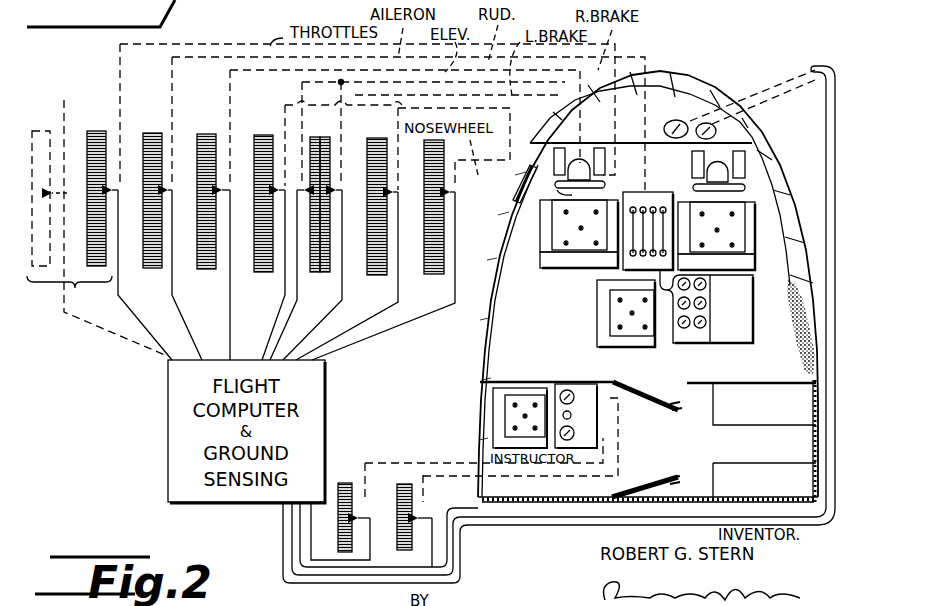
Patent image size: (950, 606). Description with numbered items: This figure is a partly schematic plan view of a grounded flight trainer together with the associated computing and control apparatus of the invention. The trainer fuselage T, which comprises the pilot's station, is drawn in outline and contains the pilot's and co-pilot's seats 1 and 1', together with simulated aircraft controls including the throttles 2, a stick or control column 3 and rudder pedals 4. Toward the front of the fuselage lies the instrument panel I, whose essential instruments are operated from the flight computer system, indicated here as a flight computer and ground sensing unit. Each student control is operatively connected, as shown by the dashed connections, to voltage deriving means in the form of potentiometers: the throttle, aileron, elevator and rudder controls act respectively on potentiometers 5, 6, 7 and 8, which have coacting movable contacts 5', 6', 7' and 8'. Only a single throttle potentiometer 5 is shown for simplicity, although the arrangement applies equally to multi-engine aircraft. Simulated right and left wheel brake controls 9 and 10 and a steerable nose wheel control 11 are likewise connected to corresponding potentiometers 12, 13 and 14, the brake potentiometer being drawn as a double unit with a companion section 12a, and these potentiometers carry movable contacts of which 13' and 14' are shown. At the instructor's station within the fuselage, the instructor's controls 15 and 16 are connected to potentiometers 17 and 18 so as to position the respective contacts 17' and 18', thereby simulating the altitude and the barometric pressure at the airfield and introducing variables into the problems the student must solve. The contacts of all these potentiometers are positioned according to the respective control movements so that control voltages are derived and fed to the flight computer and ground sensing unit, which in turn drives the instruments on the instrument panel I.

The pilot's seat 1 is at (570, 234).
The co-pilot's seat 1' is at (728, 236).
The throttles 2 is at (655, 208).
The stick or control column 3 is at (640, 186).
The rudder pedals 4 is at (554, 154).
The throttle potentiometer 5 is at (96, 182).
The throttle potentiometer movable contact 5' is at (140, 275).
The aileron potentiometer 6 is at (152, 183).
The aileron potentiometer movable contact 6' is at (183, 275).
The elevator potentiometer 7 is at (206, 184).
The elevator potentiometer movable contact 7' is at (227, 275).
The rudder potentiometer 8 is at (263, 187).
The rudder potentiometer movable contact 8' is at (275, 275).
The right wheel brake control 9 is at (599, 148).
The left wheel brake control 10 is at (560, 148).
The steerable nose wheel control 11 is at (521, 195).
The brake potentiometer 12 is at (314, 272).
The right brake sensing element 12a is at (325, 272).
The brake potentiometer 13 is at (377, 196).
The brake potentiometer movable contact 13' is at (357, 265).
The nose wheel potentiometer 14 is at (434, 223).
The nose wheel potentiometer movable contact 14' is at (397, 273).
The instructor's control 15 is at (573, 436).
The instructor's control 16 is at (573, 400).
The instructor's potentiometer 17 is at (350, 496).
The instructor's potentiometer movable contact 17' is at (352, 524).
The instructor's potentiometer 18 is at (407, 508).
The instructor's potentiometer movable contact 18' is at (437, 531).
The trainer fuselage T is at (702, 90).
The instrument panel I is at (763, 125).